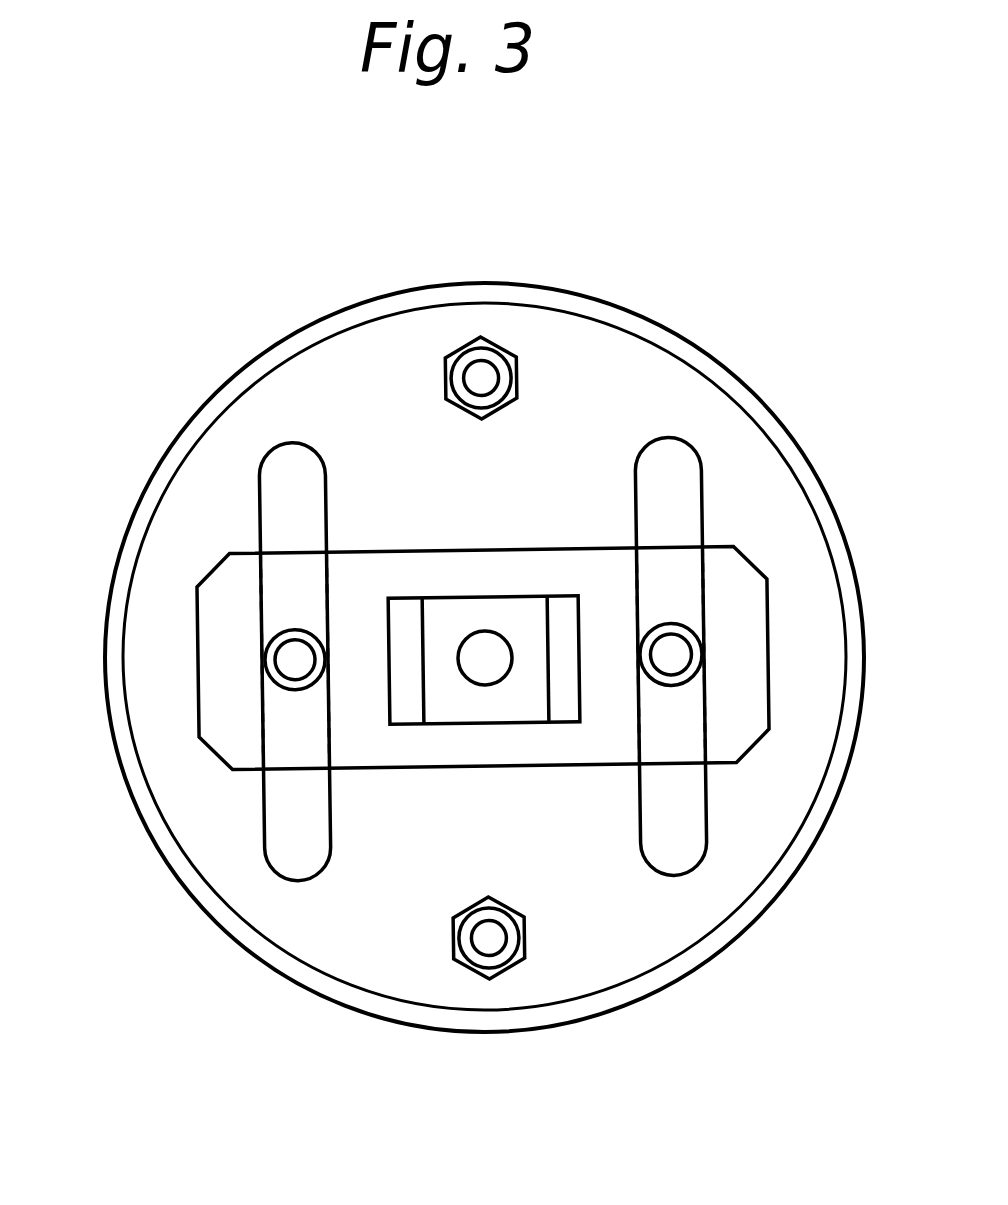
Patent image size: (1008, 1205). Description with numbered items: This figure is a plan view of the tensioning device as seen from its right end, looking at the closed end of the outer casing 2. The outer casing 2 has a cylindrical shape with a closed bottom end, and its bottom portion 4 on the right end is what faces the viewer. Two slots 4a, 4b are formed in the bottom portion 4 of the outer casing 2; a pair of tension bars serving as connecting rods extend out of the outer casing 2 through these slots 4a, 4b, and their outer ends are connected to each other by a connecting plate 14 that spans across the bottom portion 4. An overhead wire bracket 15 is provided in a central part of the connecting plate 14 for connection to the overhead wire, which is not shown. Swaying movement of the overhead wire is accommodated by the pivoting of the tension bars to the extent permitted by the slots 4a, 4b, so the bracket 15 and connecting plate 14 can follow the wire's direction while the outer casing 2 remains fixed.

The outer casing 2 is at (762, 400).
The bottom portion 4 is at (618, 360).
The slot 4a is at (704, 481).
The slot 4b is at (262, 488).
The connecting plate 14 is at (353, 760).
The overhead wire bracket 15 is at (562, 610).